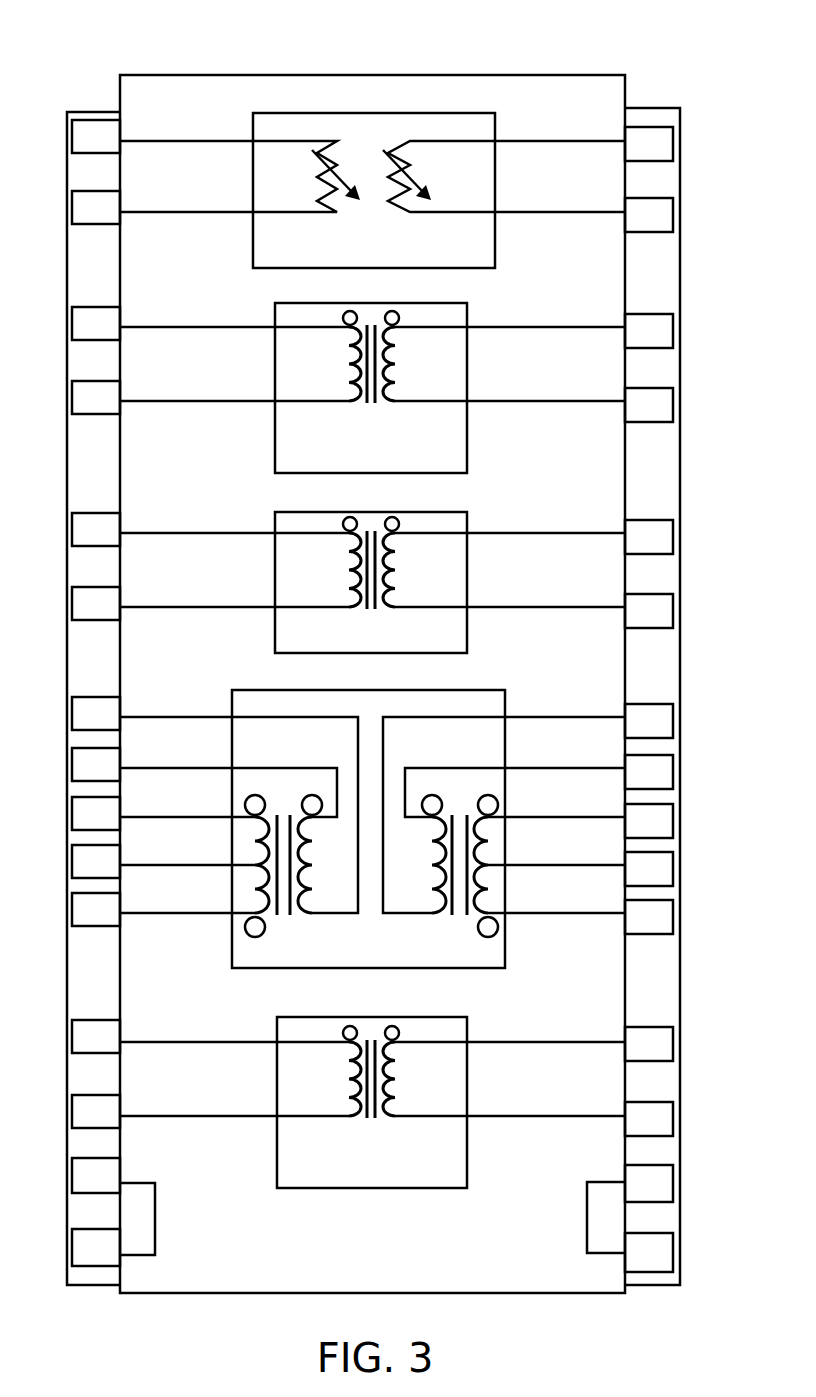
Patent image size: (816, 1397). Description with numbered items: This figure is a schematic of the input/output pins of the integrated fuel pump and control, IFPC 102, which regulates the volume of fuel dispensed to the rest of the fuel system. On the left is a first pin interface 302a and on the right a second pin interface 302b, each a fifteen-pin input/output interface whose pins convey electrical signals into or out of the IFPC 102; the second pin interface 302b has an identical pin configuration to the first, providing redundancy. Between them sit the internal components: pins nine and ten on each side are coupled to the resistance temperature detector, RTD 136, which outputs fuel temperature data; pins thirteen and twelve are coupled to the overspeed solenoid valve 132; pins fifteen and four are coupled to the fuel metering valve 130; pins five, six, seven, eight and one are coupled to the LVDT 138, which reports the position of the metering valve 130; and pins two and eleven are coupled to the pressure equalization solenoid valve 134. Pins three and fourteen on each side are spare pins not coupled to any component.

The integrated fuel pump and control (IFPC) 102 is at (203, 103).
The first pin interface 302a is at (78, 80).
The second pin interface 302b is at (663, 75).
The resistance temperature detector (RTD) 136 is at (376, 125).
The overspeed solenoid valve 132 is at (445, 430).
The fuel metering valve 130 is at (448, 625).
The linear variable differential transformer (LVDT) 138 is at (487, 955).
The pressure equalization solenoid valve 134 is at (370, 1173).